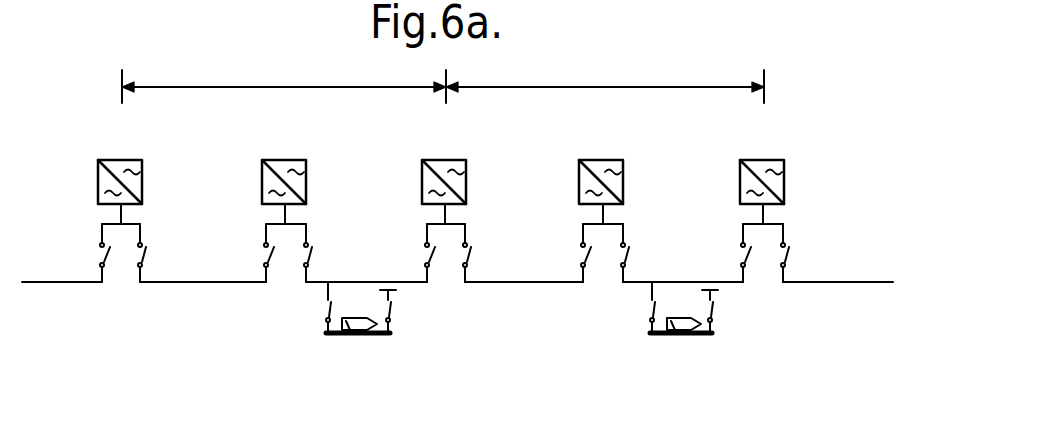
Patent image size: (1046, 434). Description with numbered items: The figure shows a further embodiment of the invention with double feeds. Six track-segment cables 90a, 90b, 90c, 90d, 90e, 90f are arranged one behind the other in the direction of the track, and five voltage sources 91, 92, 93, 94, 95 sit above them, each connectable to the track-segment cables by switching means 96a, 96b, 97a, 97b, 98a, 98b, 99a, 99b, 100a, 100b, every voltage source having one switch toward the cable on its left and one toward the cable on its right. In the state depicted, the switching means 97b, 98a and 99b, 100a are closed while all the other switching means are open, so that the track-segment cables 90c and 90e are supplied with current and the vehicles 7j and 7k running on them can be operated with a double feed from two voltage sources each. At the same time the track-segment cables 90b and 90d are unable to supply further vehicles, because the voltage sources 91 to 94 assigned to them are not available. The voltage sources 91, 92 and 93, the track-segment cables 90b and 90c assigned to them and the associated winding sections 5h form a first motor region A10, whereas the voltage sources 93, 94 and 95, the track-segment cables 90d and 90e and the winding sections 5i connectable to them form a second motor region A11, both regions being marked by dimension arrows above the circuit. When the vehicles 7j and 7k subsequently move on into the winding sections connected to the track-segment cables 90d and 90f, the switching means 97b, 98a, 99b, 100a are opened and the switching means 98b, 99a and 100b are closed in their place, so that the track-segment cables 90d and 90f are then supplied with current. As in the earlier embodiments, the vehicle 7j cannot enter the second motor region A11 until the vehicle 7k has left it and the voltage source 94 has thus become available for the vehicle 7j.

The voltage source 91 is at (123, 160).
The voltage source 92 is at (283, 160).
The voltage source 93 is at (438, 160).
The voltage source 94 is at (597, 160).
The voltage source 95 is at (758, 160).
The switching means 96a is at (95, 252).
The switching means 96b is at (145, 257).
The switching means 97a is at (260, 257).
The switching means 97b is at (310, 253).
The switching means 98a is at (423, 254).
The switching means 98b is at (470, 250).
The switching means 99a is at (580, 255).
The switching means 99b is at (627, 257).
The switching means 100a is at (740, 252).
The switching means 100b is at (788, 248).
The track-segment cable 90a is at (53, 282).
The track-segment cable 90b is at (167, 282).
The track-segment cable 90c is at (412, 282).
The track-segment cable 90d is at (523, 282).
The track-segment cable 90e is at (737, 282).
The track-segment cable 90f is at (838, 282).
The vehicle 7j is at (343, 337).
The vehicle 7k is at (662, 337).
The winding section 5h is at (375, 337).
The winding section 5i is at (697, 337).
The first motor region A10 is at (284, 79).
The second motor region A11 is at (605, 79).